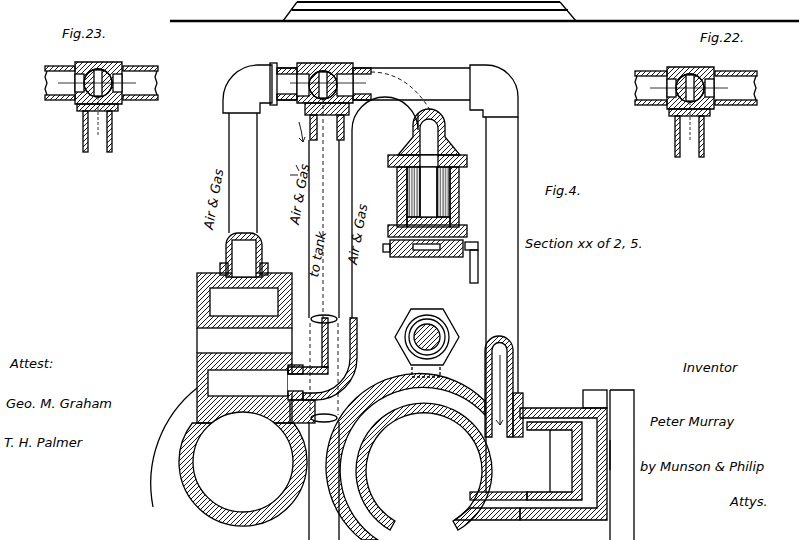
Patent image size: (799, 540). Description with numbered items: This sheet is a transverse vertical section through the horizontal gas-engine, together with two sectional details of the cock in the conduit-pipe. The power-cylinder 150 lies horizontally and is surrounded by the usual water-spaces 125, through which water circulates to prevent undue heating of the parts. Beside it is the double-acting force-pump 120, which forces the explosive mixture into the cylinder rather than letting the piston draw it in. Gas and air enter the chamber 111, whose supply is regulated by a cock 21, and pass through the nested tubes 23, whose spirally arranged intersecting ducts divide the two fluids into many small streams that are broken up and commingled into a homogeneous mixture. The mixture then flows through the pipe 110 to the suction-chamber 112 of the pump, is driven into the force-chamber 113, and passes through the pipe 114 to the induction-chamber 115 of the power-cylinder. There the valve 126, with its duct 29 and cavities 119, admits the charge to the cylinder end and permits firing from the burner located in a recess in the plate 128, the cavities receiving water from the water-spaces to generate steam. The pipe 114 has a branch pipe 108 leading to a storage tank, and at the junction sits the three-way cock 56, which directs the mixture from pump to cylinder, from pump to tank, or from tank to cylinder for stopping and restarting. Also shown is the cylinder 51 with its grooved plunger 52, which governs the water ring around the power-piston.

In FIG. 4, the cock 21 is at (455, 257).
In FIG. 4, the tubes 23 is at (420, 208).
In FIG. 4, the duct 29 is at (554, 461).
In FIG. 4, the cylinder 51 is at (446, 326).
In FIG. 4, the plunger 52 is at (406, 346).
In FIG. 23, the three-way cock 56 is at (100, 69).
In FIG. 22, the three-way cock 56 is at (689, 79).
In FIG. 4, the three-way cock 56 is at (327, 70).
In FIG. 23, the branch pipe 108 is at (102, 138).
In FIG. 22, the branch pipe 108 is at (702, 129).
In FIG. 4, the branch pipe 108 is at (327, 319).
In FIG. 4, the pipe 110 is at (405, 107).
In FIG. 4, the chamber 111 is at (456, 196).
In FIG. 4, the suction-chamber 112 is at (330, 383).
In FIG. 4, the force-chamber 113 is at (245, 263).
In FIG. 23, the pipe 114 is at (159, 84).
In FIG. 22, the pipe 114 is at (685, 88).
In FIG. 4, the pipe 114 is at (370, 278).
In FIG. 4, the induction-chamber 115 is at (504, 407).
In FIG. 4, the cavities 119 is at (564, 455).
In FIG. 4, the double-acting force-pump 120 is at (229, 457).
In FIG. 4, the water-spaces 125 is at (426, 456).
In FIG. 4, the valve 126 is at (614, 455).
In FIG. 4, the plate 128 is at (622, 392).
In FIG. 4, the power-cylinder 150 is at (424, 466).